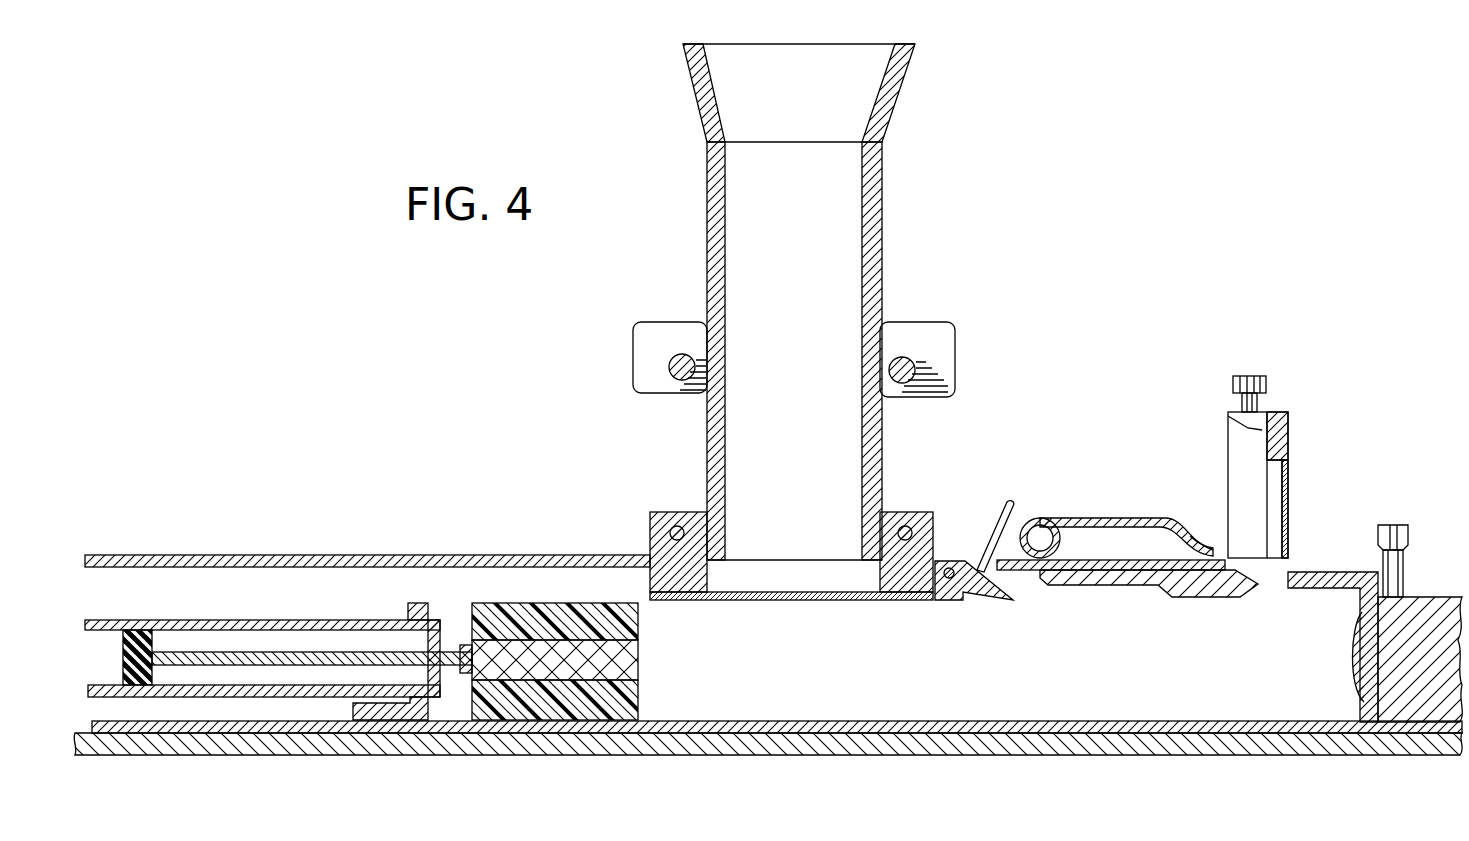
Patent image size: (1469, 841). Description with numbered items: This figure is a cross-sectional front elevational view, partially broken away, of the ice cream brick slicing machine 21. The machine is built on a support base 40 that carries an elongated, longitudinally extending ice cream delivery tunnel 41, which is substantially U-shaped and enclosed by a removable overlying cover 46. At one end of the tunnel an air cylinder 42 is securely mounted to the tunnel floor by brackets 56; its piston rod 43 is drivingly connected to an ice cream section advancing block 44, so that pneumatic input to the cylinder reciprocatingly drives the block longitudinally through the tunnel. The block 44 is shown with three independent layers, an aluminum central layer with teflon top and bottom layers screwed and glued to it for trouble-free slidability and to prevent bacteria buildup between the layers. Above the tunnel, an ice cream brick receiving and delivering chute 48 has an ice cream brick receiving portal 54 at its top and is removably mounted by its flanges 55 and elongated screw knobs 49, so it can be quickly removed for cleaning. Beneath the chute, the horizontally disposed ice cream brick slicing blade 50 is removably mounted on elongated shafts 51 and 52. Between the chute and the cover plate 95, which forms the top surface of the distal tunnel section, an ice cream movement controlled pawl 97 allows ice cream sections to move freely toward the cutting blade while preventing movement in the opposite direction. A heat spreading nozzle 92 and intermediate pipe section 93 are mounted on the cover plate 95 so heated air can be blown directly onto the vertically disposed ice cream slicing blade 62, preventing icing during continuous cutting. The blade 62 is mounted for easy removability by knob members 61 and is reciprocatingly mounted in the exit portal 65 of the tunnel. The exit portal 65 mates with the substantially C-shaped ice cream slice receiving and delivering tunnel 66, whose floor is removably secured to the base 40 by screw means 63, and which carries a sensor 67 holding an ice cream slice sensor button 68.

The ice cream brick slicing machine 21 is at (1030, 446).
The support base 40 is at (330, 755).
The ice cream delivery tunnel 41 is at (392, 580).
The air cylinder 42 is at (186, 620).
The piston rod 43 is at (462, 645).
The ice cream section advancing block 44 is at (640, 676).
The cover 46 is at (418, 555).
The ice cream brick receiving and delivering chute 48 is at (882, 153).
The screw knobs 49 is at (672, 378).
The ice cream brick slicing blade 50 is at (650, 536).
The elongated shaft 51 is at (677, 526).
The elongated shaft 52 is at (906, 526).
The ice cream brick receiving portal 54 is at (866, 44).
The flanges 55 is at (660, 322).
The brackets 56 is at (408, 612).
The knob members 61 is at (1250, 376).
The ice cream slicing blade 62 is at (1262, 436).
The screw means 63 is at (1405, 568).
The exit portal 65 is at (1290, 608).
The ice cream slice receiving and delivering tunnel 66 is at (1338, 572).
The sensor 67 is at (1424, 597).
The ice cream slice sensor button 68 is at (1356, 640).
The heat spreading nozzle 92 is at (1190, 545).
The intermediate pipe section 93 is at (1128, 518).
The cover plate 95 is at (1016, 574).
The ice cream movement controlled pawl 97 is at (949, 566).